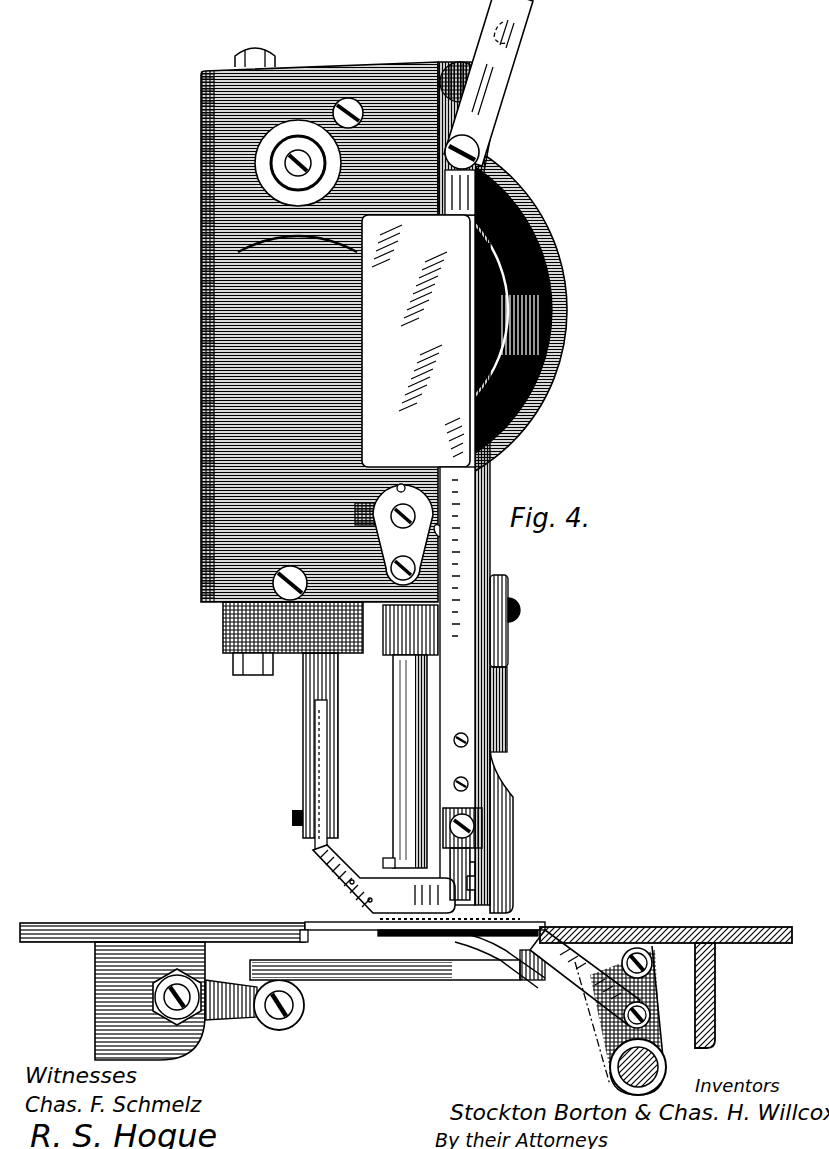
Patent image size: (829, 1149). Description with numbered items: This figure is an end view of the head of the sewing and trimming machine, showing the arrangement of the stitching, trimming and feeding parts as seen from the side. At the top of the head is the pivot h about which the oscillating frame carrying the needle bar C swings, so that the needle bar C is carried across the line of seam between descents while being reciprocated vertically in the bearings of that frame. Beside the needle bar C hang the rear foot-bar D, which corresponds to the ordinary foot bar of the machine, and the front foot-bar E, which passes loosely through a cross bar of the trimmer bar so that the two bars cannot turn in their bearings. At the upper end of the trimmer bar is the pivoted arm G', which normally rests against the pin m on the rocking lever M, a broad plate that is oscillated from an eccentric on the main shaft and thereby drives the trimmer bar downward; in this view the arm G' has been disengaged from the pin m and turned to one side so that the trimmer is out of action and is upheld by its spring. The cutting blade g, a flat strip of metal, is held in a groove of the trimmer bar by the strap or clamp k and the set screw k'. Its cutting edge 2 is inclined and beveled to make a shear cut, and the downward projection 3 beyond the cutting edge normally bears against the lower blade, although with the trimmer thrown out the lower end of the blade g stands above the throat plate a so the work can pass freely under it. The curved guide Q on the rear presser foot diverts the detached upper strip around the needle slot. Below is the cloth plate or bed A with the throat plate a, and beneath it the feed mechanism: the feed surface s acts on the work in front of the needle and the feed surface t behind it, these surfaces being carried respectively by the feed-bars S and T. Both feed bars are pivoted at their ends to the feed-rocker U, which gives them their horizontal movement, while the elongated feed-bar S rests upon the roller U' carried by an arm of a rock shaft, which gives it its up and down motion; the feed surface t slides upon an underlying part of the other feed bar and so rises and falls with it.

The pivot h is at (257, 54).
The rocking lever M is at (410, 68).
The pin m is at (462, 66).
The pivoted arm G' is at (488, 84).
The rear foot-bar D is at (332, 718).
The needle bar C is at (398, 736).
The front foot-bar E is at (457, 686).
The strap or clamp k is at (455, 828).
The set screw k' is at (480, 813).
The cutting blade g is at (452, 860).
The cutting edge 2 is at (467, 876).
The downward projection 3 is at (462, 898).
The curved guide Q is at (384, 879).
The feed surface t is at (385, 921).
The throat plate a is at (419, 939).
The cloth plate or bed A is at (232, 930).
The feed surface s is at (512, 920).
The feed-bar S is at (530, 980).
The feed-bar T is at (608, 1006).
The feed-rocker U is at (629, 1020).
The roller U' is at (284, 1010).